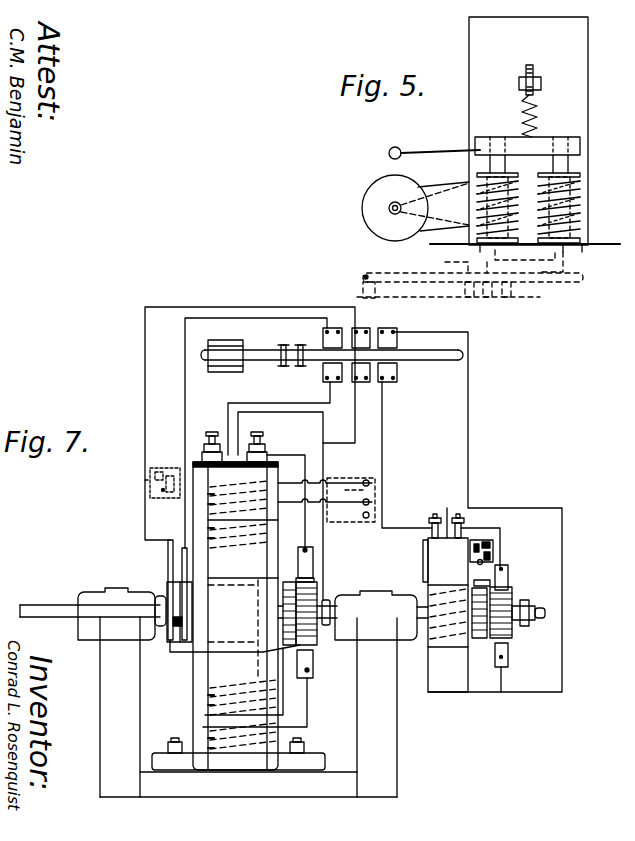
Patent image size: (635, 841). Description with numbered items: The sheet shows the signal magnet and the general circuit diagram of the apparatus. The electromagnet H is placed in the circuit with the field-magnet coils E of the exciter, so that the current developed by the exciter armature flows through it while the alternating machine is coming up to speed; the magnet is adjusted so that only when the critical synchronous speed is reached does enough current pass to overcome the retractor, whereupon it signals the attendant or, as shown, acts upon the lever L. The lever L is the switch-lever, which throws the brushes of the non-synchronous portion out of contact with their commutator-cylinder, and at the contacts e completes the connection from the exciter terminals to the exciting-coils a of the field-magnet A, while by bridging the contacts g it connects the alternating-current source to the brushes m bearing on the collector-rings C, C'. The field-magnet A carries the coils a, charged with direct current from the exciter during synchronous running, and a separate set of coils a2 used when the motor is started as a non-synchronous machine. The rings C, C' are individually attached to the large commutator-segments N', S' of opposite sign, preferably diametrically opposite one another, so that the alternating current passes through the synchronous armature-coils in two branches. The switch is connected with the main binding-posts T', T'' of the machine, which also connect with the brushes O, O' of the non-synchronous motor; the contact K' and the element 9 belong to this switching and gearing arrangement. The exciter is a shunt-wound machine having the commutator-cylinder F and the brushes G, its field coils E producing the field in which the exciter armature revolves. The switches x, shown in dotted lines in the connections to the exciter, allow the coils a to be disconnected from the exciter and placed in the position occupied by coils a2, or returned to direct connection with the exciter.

In FIG. 5, the electromagnet H is at (578, 190).
In FIG. 7, the electromagnet H is at (493, 546).
In FIG. 5, the lever L is at (520, 284).
In FIG. 7, the contacts g is at (354, 330).
In FIG. 7, the contacts e is at (397, 335).
In FIG. 7, the main binding-post T' is at (209, 438).
In FIG. 7, the terminal T'' is at (270, 444).
In FIG. 7, the switch contact K' is at (162, 471).
In FIG. 7, the field-magnet A is at (198, 678).
In FIG. 7, the exciting-coils a is at (238, 512).
In FIG. 7, the exciting-coils a2 is at (208, 737).
In FIG. 7, the collector-ring C is at (224, 623).
In FIG. 7, the brush bars m is at (185, 574).
In FIG. 7, the collector-ring C' is at (199, 623).
In FIG. 7, the gear 9 is at (318, 636).
In FIG. 7, the brush O' is at (324, 562).
In FIG. 7, the commutator-segment S' is at (387, 574).
In FIG. 7, the brush O is at (258, 688).
In FIG. 7, the commutator-segment N' is at (251, 681).
In FIG. 7, the switch x is at (347, 503).
In FIG. 7, the field-magnet coils E is at (427, 584).
In FIG. 7, the brushes G is at (509, 578).
In FIG. 7, the commutator-cylinder F is at (510, 627).